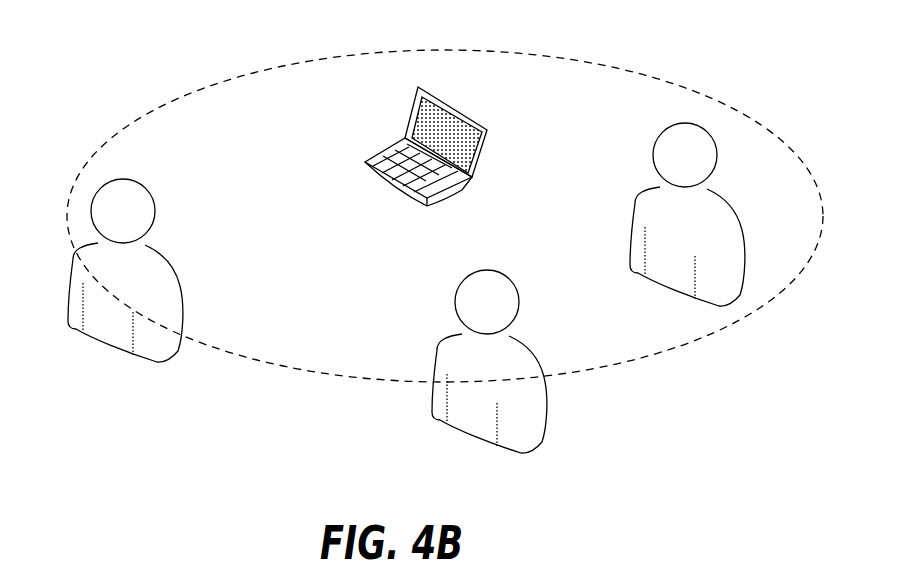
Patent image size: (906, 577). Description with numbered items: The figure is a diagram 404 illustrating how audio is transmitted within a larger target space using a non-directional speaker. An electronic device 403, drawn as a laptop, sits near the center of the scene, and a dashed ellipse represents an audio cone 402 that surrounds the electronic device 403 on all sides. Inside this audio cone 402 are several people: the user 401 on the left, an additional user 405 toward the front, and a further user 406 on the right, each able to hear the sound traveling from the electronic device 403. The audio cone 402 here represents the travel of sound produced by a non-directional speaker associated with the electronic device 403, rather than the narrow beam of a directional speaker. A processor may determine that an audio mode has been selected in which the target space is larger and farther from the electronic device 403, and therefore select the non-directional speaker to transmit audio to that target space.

The user 401 is at (157, 211).
The audio cone 402 is at (500, 50).
The electronic device 403 is at (452, 97).
The diagram 404 is at (114, 48).
The additional user 405 is at (525, 348).
The third user / participant 406 is at (707, 190).